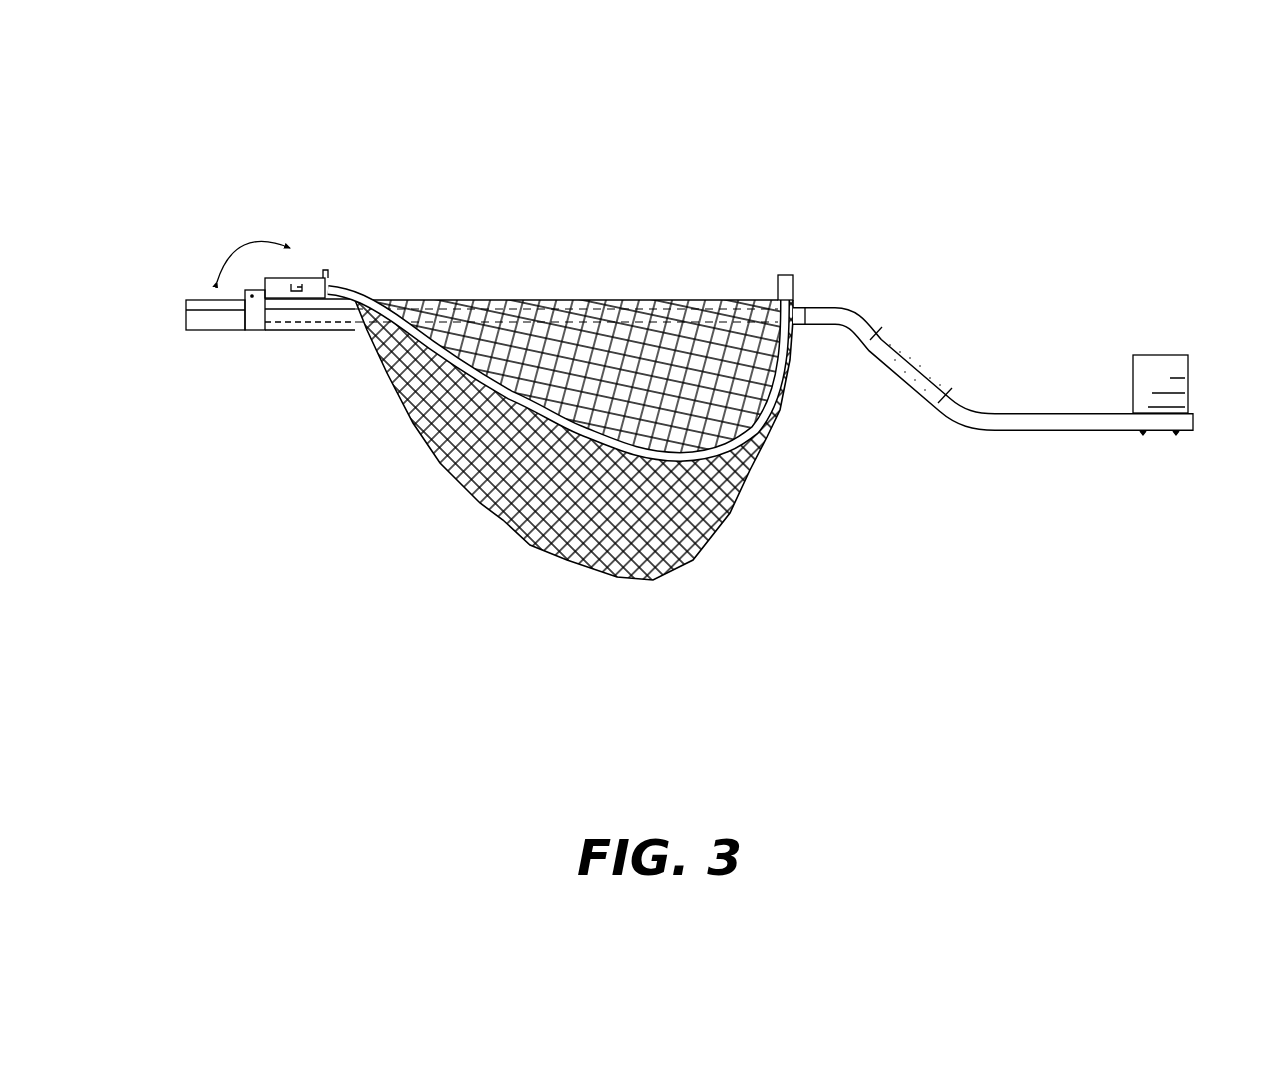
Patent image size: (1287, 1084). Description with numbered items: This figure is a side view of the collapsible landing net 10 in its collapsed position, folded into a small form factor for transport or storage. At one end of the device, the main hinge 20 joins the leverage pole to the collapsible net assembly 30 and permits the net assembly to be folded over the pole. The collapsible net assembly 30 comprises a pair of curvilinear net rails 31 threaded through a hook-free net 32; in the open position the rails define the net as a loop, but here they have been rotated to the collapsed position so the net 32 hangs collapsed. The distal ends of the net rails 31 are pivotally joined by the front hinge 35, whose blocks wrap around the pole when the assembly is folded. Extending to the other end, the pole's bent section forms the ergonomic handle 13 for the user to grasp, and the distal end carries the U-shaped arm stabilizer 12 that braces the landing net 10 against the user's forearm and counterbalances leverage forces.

The collapsible landing net 10 is at (273, 110).
The arm stabilizer 12 is at (1190, 360).
The handle 13 is at (912, 347).
The main hinge 20 is at (208, 370).
The collapsible net assembly 30 is at (393, 512).
The net rail 31 is at (785, 417).
The net 32 is at (712, 548).
The front hinge 35 is at (785, 275).